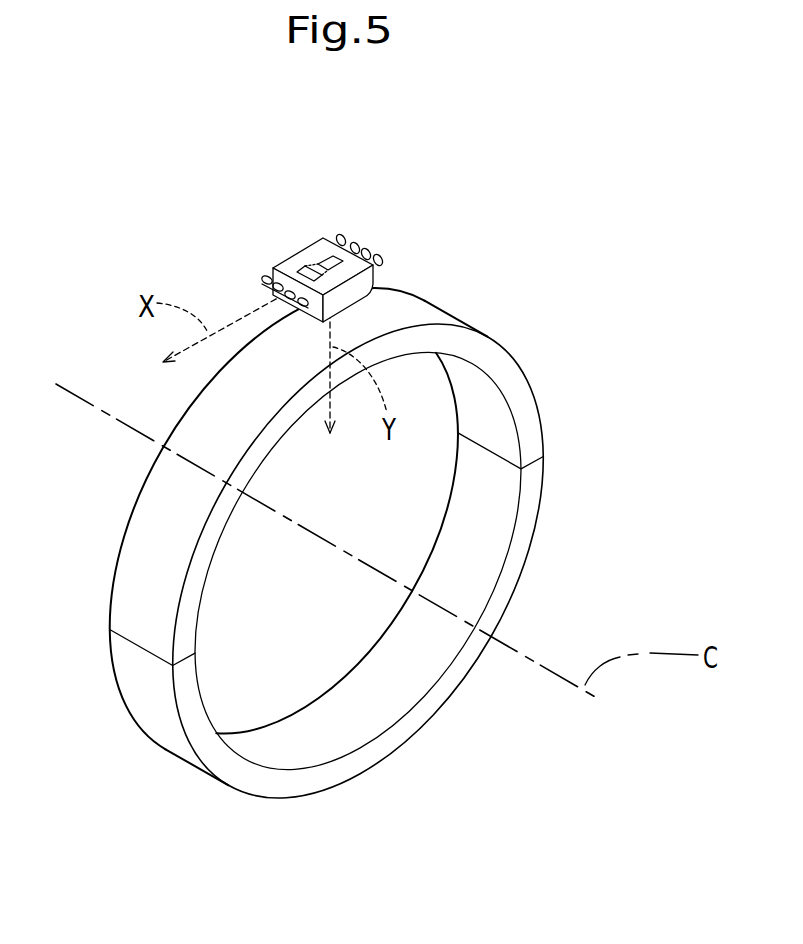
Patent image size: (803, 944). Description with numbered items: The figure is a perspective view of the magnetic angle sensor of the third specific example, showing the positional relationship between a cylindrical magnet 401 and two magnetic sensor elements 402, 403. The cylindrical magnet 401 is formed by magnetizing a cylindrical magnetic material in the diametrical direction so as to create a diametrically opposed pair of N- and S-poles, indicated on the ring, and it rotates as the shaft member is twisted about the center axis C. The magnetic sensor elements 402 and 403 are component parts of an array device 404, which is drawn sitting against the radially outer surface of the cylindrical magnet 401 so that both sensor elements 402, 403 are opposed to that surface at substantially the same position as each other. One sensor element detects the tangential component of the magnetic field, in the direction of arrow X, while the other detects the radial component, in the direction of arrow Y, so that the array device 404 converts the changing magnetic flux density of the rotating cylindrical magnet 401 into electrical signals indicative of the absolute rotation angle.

The cylindrical magnet 401 is at (520, 550).
The magnetic sensor element 402 is at (305, 262).
The magnetic sensor element 403 is at (375, 278).
The array device 404 is at (357, 240).